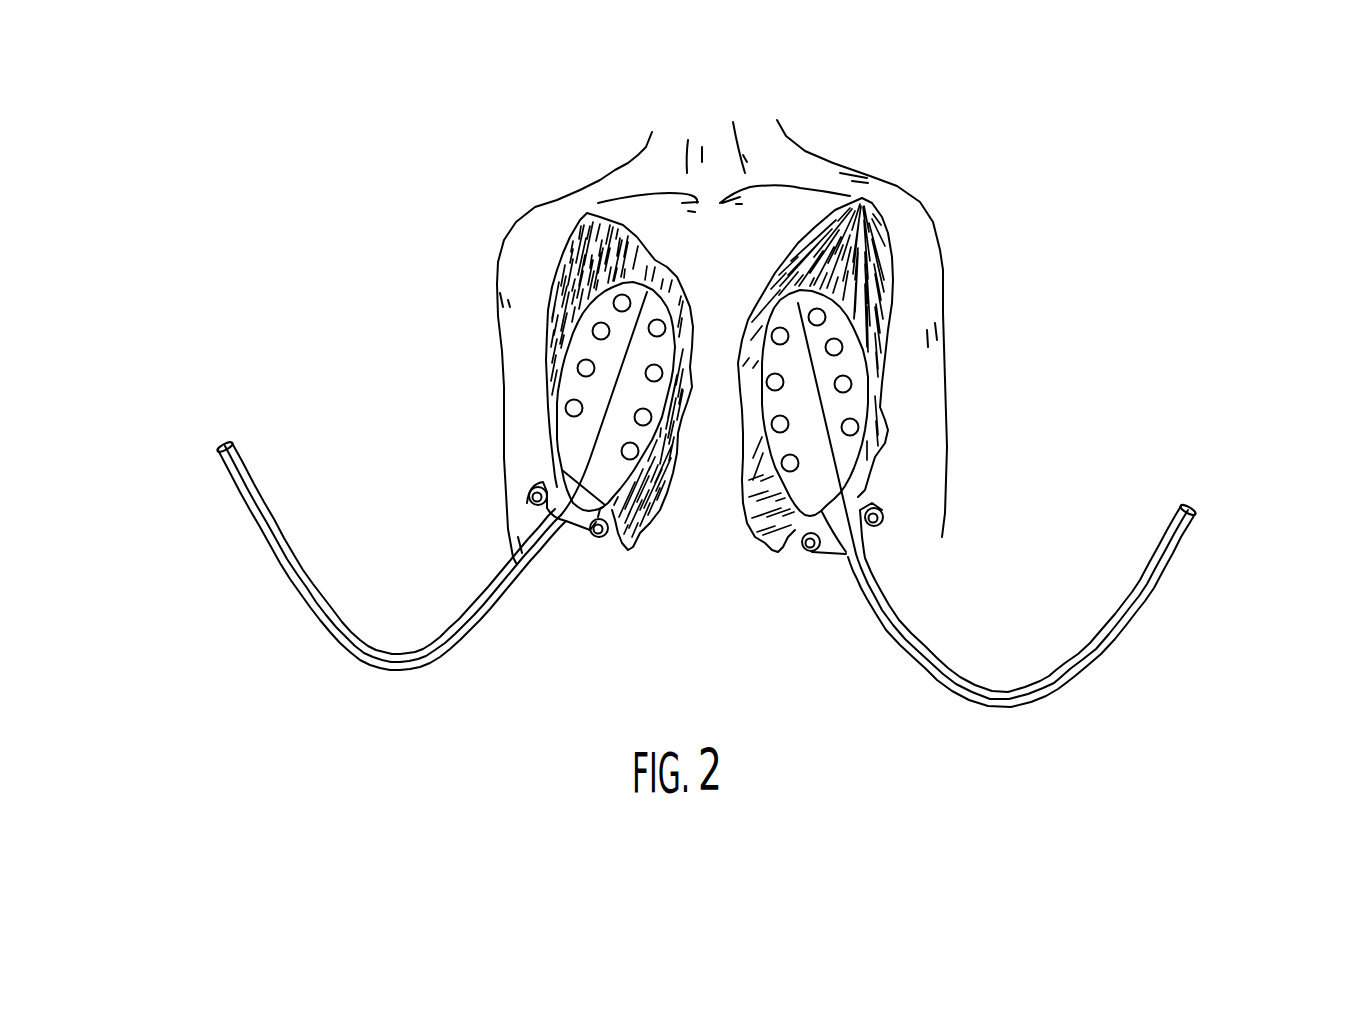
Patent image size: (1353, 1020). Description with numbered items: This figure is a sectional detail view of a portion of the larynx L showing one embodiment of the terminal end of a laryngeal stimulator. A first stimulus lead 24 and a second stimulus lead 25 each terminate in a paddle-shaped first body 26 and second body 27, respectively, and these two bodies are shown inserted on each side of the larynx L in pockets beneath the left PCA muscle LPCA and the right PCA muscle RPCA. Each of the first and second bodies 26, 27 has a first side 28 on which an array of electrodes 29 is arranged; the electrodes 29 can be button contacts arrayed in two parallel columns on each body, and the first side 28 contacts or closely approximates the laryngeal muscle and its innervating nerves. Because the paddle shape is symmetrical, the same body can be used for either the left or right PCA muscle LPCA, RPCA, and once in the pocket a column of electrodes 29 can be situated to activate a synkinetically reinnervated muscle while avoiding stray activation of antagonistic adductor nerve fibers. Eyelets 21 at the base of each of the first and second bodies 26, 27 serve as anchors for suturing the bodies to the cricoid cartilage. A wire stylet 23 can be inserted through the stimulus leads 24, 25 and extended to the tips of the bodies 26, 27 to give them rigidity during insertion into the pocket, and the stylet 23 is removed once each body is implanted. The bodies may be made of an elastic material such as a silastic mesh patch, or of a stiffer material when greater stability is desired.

The eyelets 21 is at (530, 503).
The wire stylet 23 is at (225, 442).
The first stimulus lead 24 is at (492, 623).
The second stimulus lead 25 is at (871, 616).
The first body 26 is at (590, 317).
The second body 27 is at (843, 320).
The first side 28 is at (570, 379).
The electrodes 29 is at (566, 409).
The left PCA muscle LPCA is at (583, 250).
The right PCA muscle RPCA is at (863, 197).
The larynx L is at (402, 276).